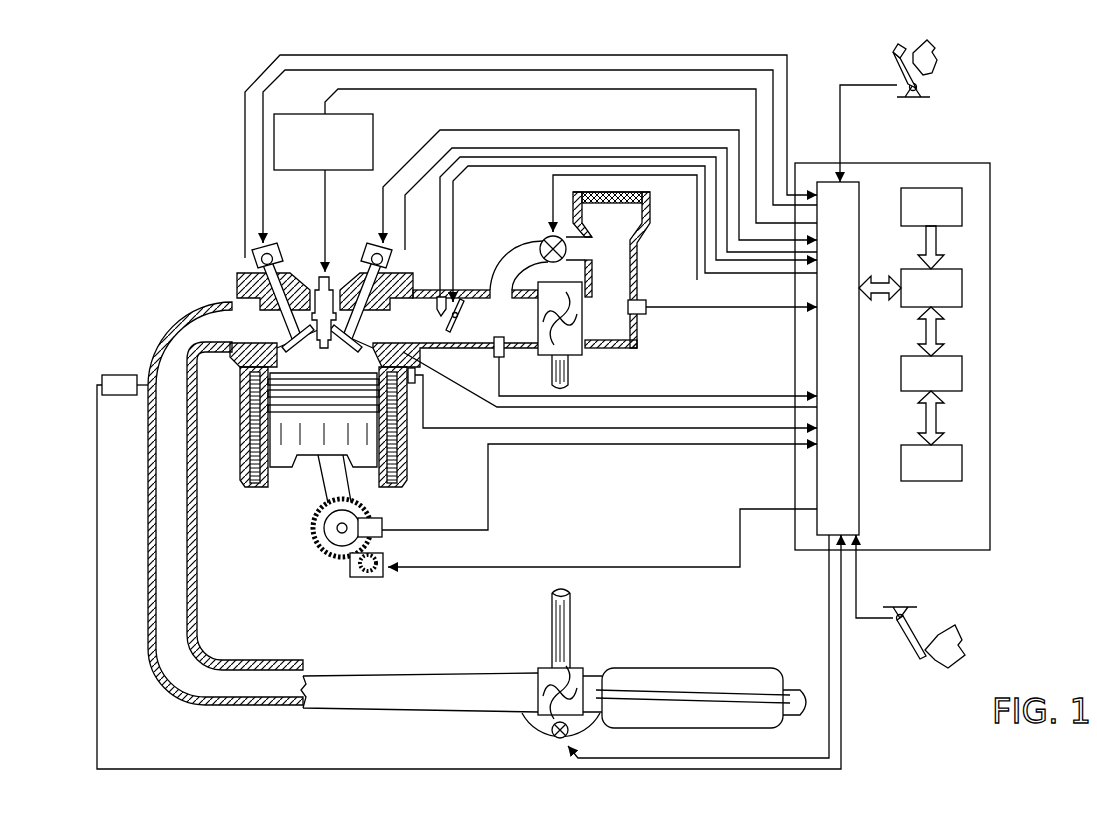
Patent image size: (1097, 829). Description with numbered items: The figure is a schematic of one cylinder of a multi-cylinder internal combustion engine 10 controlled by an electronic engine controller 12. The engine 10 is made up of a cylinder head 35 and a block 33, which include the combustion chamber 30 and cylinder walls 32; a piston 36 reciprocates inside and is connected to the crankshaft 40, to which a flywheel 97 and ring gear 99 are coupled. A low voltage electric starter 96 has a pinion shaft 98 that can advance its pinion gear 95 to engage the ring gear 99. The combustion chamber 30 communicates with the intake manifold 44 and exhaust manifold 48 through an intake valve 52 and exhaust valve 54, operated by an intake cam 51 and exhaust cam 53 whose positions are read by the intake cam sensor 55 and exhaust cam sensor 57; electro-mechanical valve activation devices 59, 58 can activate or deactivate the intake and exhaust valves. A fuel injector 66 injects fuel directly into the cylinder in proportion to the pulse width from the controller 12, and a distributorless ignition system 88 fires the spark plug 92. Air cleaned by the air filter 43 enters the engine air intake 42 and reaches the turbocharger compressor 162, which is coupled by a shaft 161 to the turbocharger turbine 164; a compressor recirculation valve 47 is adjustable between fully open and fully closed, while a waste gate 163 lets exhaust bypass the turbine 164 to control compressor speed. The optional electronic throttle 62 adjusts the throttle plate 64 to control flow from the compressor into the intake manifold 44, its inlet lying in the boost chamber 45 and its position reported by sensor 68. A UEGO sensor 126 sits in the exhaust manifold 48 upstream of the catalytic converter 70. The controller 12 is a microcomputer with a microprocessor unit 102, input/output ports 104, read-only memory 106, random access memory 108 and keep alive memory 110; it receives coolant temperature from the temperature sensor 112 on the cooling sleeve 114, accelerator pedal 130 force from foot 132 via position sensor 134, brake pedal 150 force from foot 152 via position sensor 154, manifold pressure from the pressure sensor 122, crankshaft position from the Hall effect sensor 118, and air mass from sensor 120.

The internal combustion engine 10 is at (168, 228).
The electronic engine controller 12 is at (985, 163).
The combustion chamber 30 is at (320, 358).
The cylinder walls 32 is at (277, 478).
The block 33 is at (234, 393).
The cylinder head 35 is at (231, 274).
The piston 36 is at (310, 440).
The crankshaft 40 is at (328, 536).
The engine air intake 42 is at (507, 209).
The air filter 43 is at (628, 206).
The intake manifold 44 is at (475, 310).
The boost chamber 45 is at (509, 320).
The compressor recirculation valve 47 is at (547, 240).
The exhaust manifold 48 is at (343, 507).
The intake cam 51 is at (375, 250).
The intake valve 52 is at (356, 328).
The exhaust cam 53 is at (266, 252).
The exhaust valve 54 is at (231, 303).
The intake cam sensor 55 is at (390, 263).
The exhaust cam sensor 57 is at (256, 260).
The valve activation device 58 is at (283, 256).
The valve activation device 59 is at (369, 259).
The electronic throttle 62 is at (461, 318).
The throttle plate 64 is at (452, 325).
The fuel injector 66 is at (418, 375).
The throttle position sensor 68 is at (439, 299).
The catalytic converter 70 is at (640, 668).
The distributorless ignition system 88 is at (289, 114).
The spark plug 92 is at (331, 292).
The pinion gear 95 is at (370, 578).
The starter 96 is at (383, 576).
The flywheel 97 is at (320, 522).
The pinion shaft 98 is at (360, 577).
The ring gear 99 is at (334, 562).
The microprocessor unit 102 is at (964, 282).
The input/output ports 104 is at (862, 187).
The read-only memory 106 is at (965, 204).
The random access memory 108 is at (964, 372).
The keep alive memory 110 is at (964, 462).
The temperature sensor 112 is at (415, 386).
The cooling sleeve 114 is at (403, 430).
The Hall effect sensor 118 is at (383, 520).
The air mass sensor 120 is at (645, 300).
The pressure sensor 122 is at (494, 355).
The Universal Exhaust Gas Oxygen sensor 126 is at (102, 383).
The accelerator pedal 130 is at (896, 63).
The foot 132 is at (938, 54).
The position sensor 134 is at (923, 88).
The brake pedal 150 is at (920, 660).
The foot 152 is at (950, 632).
The position sensor 154 is at (893, 613).
The shaft 161 is at (552, 375).
The turbocharger compressor 162 is at (565, 342).
The waste gate 163 is at (553, 738).
The turbocharger turbine 164 is at (546, 667).